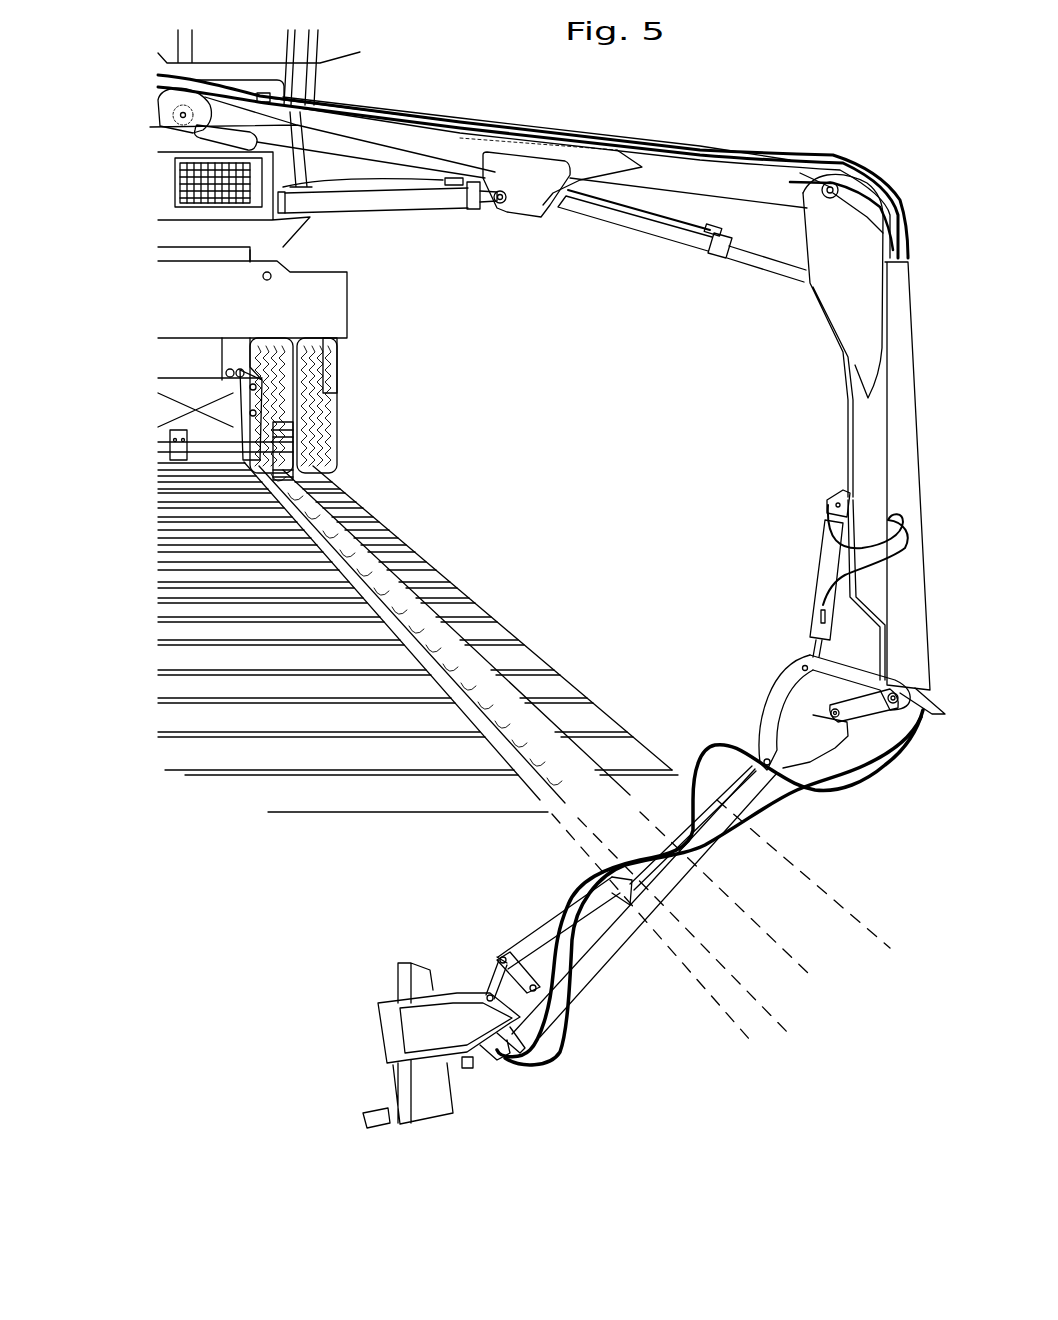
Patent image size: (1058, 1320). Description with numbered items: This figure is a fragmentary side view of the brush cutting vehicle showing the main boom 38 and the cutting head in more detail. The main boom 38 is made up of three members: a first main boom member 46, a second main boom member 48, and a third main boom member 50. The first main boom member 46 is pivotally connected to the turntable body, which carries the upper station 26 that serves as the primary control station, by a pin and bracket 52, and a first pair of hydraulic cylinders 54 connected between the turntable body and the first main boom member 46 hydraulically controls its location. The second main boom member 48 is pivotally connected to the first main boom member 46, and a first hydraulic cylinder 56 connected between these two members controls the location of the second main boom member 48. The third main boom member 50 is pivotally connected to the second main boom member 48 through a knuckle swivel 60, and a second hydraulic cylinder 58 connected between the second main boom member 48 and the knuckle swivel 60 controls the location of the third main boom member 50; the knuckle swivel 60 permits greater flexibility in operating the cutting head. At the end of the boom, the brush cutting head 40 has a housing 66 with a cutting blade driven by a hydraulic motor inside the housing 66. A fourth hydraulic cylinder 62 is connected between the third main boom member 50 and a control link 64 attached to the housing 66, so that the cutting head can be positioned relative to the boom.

The upper station 26 is at (322, 63).
The main boom 38 is at (387, 132).
The brush cutting head 40 is at (407, 963).
The first main boom member 46 is at (722, 172).
The second main boom member 48 is at (908, 418).
The third main boom member 50 is at (712, 851).
The pin and bracket 52 is at (183, 115).
The first pair of hydraulic cylinders 54 is at (402, 200).
The first hydraulic cylinder 56 is at (667, 237).
The second hydraulic cylinder 58 is at (826, 568).
The knuckle swivel 60 is at (783, 690).
The fourth hydraulic cylinder 62 is at (536, 935).
The control link 64 is at (492, 970).
The housing 66 is at (455, 997).